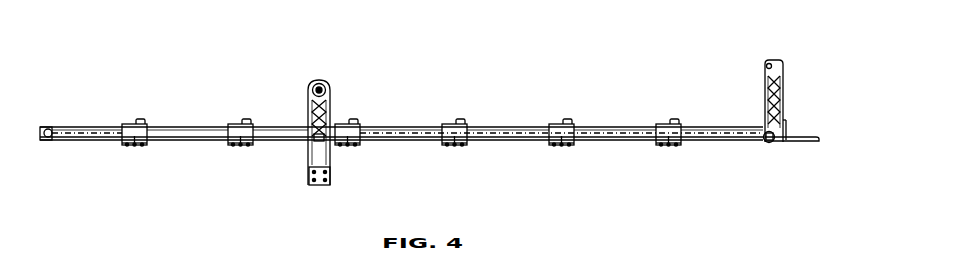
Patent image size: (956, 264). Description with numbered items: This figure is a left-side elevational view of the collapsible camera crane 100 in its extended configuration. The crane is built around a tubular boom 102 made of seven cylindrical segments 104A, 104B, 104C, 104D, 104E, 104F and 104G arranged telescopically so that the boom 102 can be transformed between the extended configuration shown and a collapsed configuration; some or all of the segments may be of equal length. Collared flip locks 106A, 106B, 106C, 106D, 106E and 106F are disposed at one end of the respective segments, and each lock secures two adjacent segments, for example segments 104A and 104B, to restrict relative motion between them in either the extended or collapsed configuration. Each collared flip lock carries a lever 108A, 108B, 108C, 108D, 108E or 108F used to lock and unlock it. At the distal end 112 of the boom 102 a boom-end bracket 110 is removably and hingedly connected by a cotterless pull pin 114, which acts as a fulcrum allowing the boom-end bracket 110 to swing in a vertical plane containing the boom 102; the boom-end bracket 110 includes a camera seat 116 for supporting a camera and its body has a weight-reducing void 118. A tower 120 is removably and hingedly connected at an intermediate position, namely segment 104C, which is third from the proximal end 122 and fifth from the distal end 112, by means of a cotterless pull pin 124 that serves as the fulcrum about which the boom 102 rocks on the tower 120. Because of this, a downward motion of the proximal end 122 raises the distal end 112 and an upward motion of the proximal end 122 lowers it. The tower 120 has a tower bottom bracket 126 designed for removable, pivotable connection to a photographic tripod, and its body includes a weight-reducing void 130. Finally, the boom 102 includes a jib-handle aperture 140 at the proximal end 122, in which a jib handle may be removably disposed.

The collapsible camera crane 100 is at (152, 55).
The tubular boom 102 is at (616, 194).
The segment 104A is at (78, 132).
The segment 104B is at (195, 130).
The segment 104C is at (277, 130).
The segment 104D is at (400, 128).
The segment 104E is at (502, 130).
The segment 104F is at (617, 130).
The segment 104G is at (715, 130).
The collared flip lock 106A is at (138, 152).
The collared flip lock 106B is at (247, 148).
The collared flip lock 106C is at (353, 148).
The collared flip lock 106D is at (453, 147).
The collared flip lock 106E is at (557, 147).
The collared flip lock 106F is at (668, 147).
The lever 108A is at (137, 122).
The lever 108B is at (247, 123).
The lever 108C is at (355, 122).
The lever 108D is at (458, 122).
The lever 108E is at (568, 122).
The lever 108F is at (675, 122).
The boom-end bracket 110 is at (773, 60).
The distal end 112 is at (796, 71).
The cotterless pull pin 114 is at (770, 143).
The camera seat 116 is at (803, 142).
The void 118 is at (768, 78).
The tower 120 is at (328, 87).
The proximal end 122 is at (69, 88).
The cotterless pull pin 124 is at (313, 138).
The tower bottom bracket 126 is at (320, 184).
The void 130 is at (314, 88).
The jib-handle aperture 140 is at (43, 128).